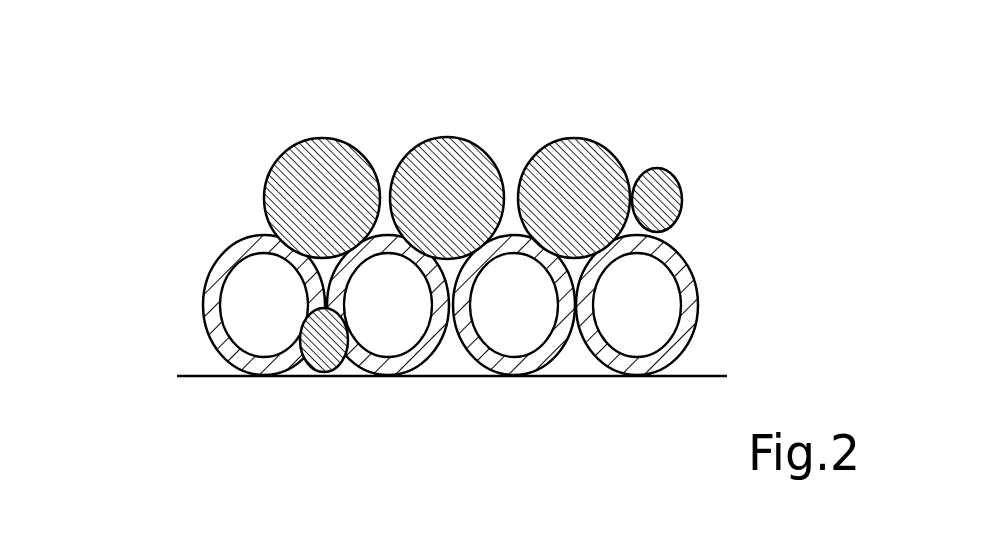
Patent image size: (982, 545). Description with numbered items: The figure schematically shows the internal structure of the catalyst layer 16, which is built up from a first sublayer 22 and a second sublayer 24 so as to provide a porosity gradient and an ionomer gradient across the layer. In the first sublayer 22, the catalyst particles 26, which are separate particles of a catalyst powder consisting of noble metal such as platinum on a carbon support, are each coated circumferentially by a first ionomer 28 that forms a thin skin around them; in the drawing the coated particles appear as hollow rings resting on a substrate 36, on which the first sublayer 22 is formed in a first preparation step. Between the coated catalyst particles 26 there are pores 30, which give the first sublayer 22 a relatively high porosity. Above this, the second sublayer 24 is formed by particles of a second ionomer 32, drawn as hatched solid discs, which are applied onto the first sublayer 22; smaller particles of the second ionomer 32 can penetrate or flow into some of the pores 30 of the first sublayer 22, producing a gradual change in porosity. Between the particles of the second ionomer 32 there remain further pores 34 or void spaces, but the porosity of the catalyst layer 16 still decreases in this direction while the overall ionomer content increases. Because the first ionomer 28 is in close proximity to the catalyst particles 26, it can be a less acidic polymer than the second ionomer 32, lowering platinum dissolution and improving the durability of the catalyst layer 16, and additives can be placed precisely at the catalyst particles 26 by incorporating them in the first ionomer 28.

The catalyst layer 16 is at (192, 107).
The first sublayer 22 is at (152, 283).
The second sublayer 24 is at (202, 180).
The catalyst particles 26 is at (265, 303).
The first ionomer 28 is at (220, 260).
The pores 30 is at (325, 274).
The second ionomer 32 is at (327, 150).
The pores 34 is at (385, 170).
The substrate 36 is at (190, 372).